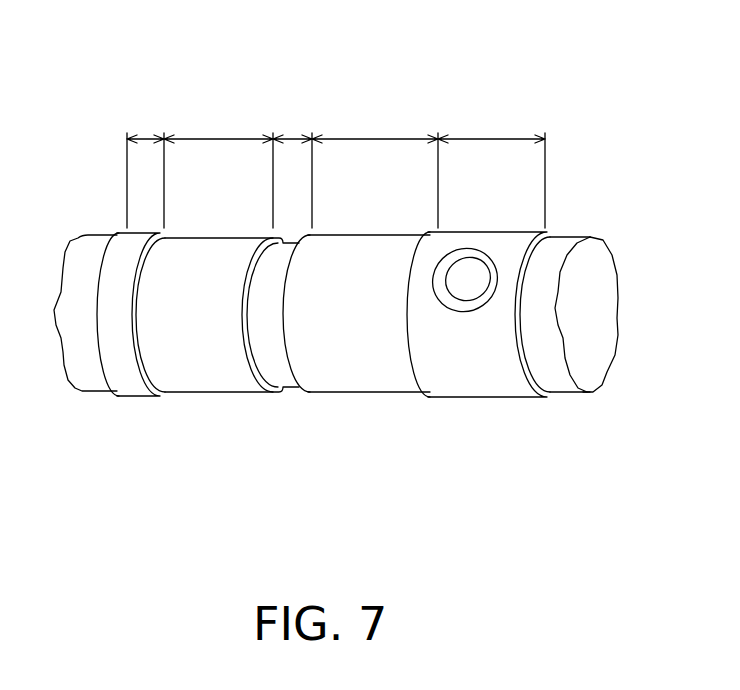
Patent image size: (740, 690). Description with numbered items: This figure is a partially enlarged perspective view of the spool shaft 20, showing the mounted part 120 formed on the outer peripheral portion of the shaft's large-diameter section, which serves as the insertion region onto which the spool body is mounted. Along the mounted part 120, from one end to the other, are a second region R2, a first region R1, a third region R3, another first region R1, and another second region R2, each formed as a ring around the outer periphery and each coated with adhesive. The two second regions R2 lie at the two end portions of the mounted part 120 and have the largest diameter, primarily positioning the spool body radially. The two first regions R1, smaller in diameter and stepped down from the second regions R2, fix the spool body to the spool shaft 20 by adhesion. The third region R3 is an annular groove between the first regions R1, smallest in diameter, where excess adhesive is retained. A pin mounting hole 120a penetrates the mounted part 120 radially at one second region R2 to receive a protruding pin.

The spool shaft 20 is at (336, 285).
The mounted part 120 is at (326, 255).
The pin mounting hole 120a is at (490, 275).
The first region R1 is at (301, 121).
The second region R2 is at (336, 121).
The third region R3 is at (294, 121).